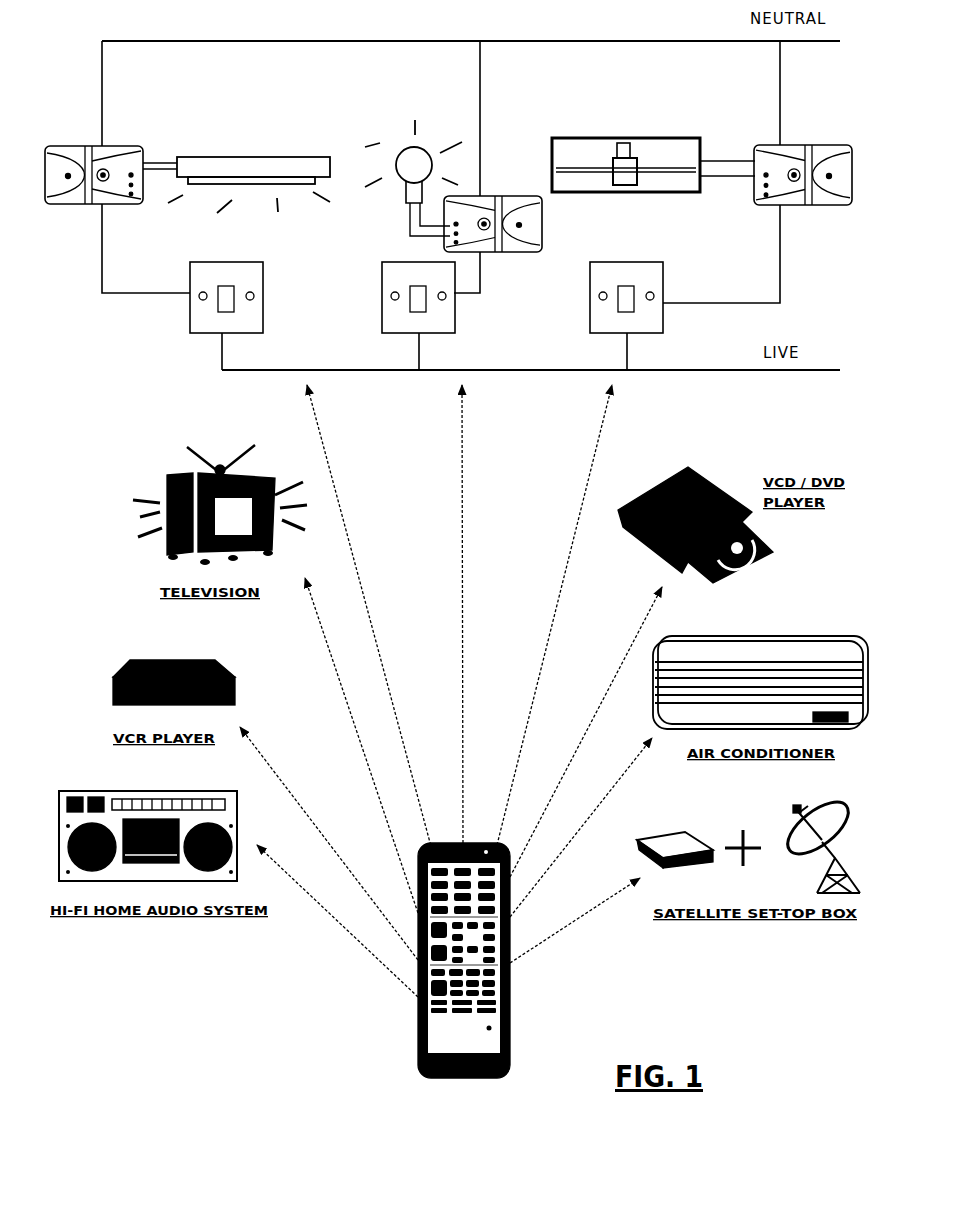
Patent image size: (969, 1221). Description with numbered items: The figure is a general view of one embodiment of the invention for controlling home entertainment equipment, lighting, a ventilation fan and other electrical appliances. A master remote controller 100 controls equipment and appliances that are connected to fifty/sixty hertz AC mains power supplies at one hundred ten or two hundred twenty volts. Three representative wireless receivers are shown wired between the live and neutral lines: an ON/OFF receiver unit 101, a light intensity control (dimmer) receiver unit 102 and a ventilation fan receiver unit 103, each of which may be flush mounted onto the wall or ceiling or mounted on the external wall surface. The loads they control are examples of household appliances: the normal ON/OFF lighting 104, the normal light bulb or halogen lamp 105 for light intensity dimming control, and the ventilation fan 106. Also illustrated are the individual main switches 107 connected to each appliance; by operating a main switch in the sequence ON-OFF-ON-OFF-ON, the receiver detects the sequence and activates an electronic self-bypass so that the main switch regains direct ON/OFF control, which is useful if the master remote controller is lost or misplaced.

The master remote controller 100 is at (413, 1027).
The ON/OFF receiver unit 101 is at (77, 206).
The light intensity control (dimmer) receiver unit 102 is at (513, 253).
The ventilation fan receiver unit 103 is at (810, 205).
The ON/OFF lighting 104 is at (235, 155).
The light bulb or halogen lamp 105 is at (400, 147).
The ventilation fan 106 is at (645, 135).
The main switch 107 is at (190, 334).